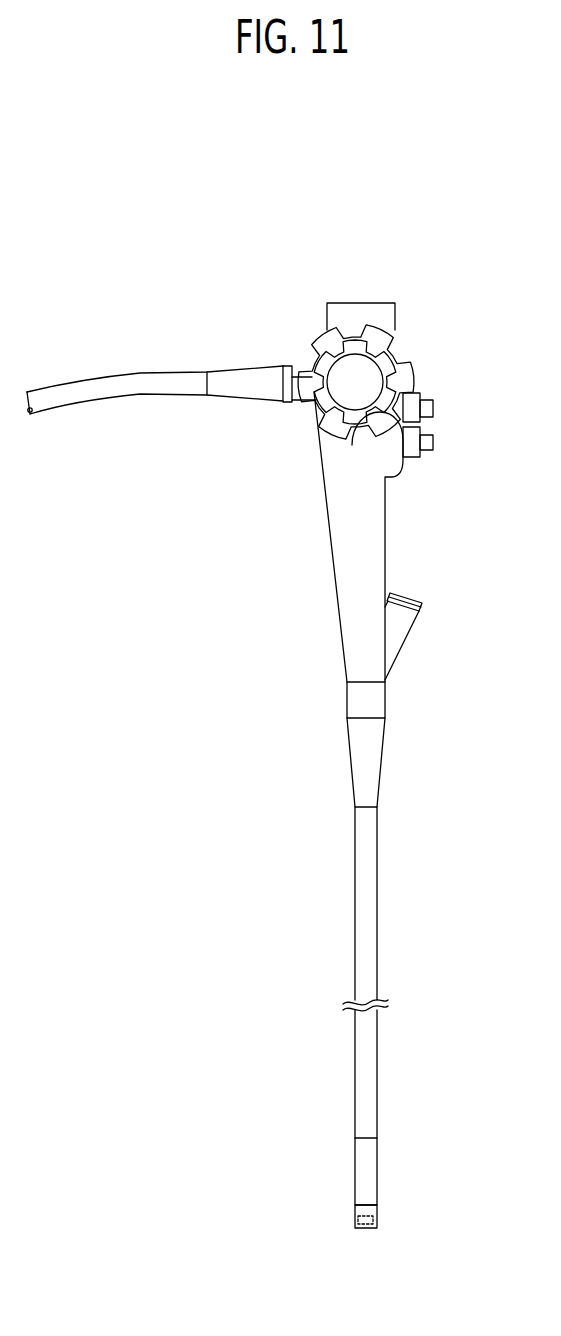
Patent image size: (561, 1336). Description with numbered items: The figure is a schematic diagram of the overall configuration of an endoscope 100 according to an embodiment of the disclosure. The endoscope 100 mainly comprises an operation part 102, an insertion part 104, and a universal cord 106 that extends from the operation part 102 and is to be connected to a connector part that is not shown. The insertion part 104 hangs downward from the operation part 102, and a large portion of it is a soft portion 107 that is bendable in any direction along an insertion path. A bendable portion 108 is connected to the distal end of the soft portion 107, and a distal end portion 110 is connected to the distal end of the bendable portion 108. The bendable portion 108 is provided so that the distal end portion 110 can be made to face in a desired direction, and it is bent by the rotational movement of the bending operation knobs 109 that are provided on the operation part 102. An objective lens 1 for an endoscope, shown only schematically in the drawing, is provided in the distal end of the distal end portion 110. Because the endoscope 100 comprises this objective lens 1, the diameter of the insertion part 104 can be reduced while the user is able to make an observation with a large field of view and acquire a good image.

The endoscope 100 is at (300, 279).
The operation part 102 is at (400, 303).
The insertion part 104 is at (393, 808).
The universal cord 106 is at (68, 382).
The soft portion 107 is at (355, 922).
The bendable portion 108 is at (355, 1178).
The bending operation knobs 109 is at (348, 388).
The distal end portion 110 is at (355, 1218).
The objective lens for an endoscope 1 is at (362, 1230).